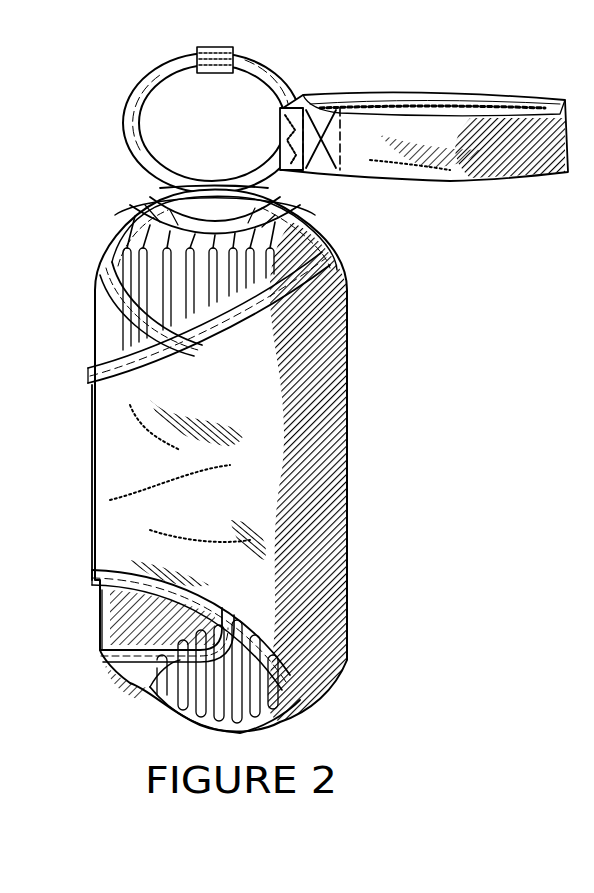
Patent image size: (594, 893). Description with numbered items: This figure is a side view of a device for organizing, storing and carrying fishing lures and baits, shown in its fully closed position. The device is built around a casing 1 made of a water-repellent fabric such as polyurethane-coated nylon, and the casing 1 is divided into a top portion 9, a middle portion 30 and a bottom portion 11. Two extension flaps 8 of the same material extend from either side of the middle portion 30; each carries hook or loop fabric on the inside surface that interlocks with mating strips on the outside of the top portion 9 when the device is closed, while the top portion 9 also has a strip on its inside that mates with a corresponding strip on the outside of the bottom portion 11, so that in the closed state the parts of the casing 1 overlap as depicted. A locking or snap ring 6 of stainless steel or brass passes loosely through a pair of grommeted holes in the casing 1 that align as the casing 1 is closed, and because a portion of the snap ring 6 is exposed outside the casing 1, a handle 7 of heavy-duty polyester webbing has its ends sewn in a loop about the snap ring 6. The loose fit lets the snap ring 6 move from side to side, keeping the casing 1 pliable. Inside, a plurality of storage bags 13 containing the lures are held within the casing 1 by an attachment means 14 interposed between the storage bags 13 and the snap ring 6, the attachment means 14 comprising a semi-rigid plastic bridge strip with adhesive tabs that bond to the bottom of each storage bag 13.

The casing 1 is at (292, 461).
The snap ring 6 is at (148, 88).
The handle 7 is at (413, 94).
The extension flap 8 is at (112, 470).
The top portion 9 is at (110, 333).
The bottom portion 11 is at (132, 688).
The storage bag 13 is at (253, 281).
The attachment means 14 is at (128, 230).
The middle portion 30 is at (348, 556).